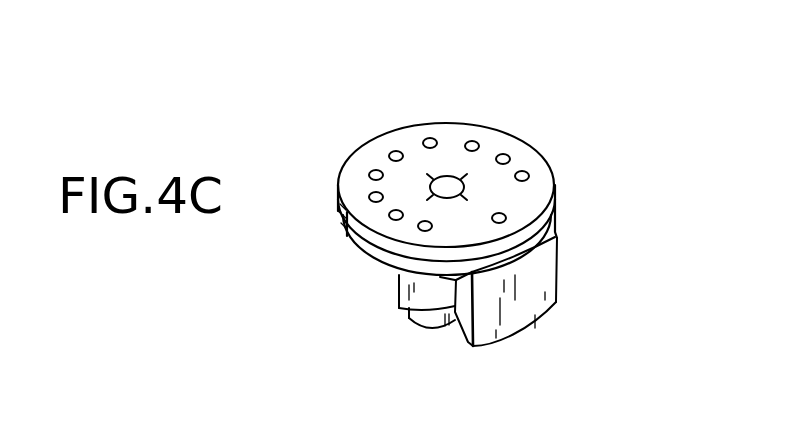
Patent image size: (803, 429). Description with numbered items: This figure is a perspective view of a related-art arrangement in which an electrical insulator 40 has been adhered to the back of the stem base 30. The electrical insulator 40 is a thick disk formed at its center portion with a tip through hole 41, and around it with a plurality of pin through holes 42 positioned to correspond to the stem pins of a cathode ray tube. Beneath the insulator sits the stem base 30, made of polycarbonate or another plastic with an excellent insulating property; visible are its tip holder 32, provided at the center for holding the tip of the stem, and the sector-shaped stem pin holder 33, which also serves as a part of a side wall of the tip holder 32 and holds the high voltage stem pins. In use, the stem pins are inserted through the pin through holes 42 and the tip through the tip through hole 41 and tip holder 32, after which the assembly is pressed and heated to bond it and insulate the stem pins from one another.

The stem base 30 is at (492, 289).
The tip holder 32 is at (410, 291).
The stem pin holder 33 is at (530, 303).
The electrical insulator 40 is at (533, 170).
The tip through hole 41 is at (445, 177).
The pin through holes 42 is at (478, 143).